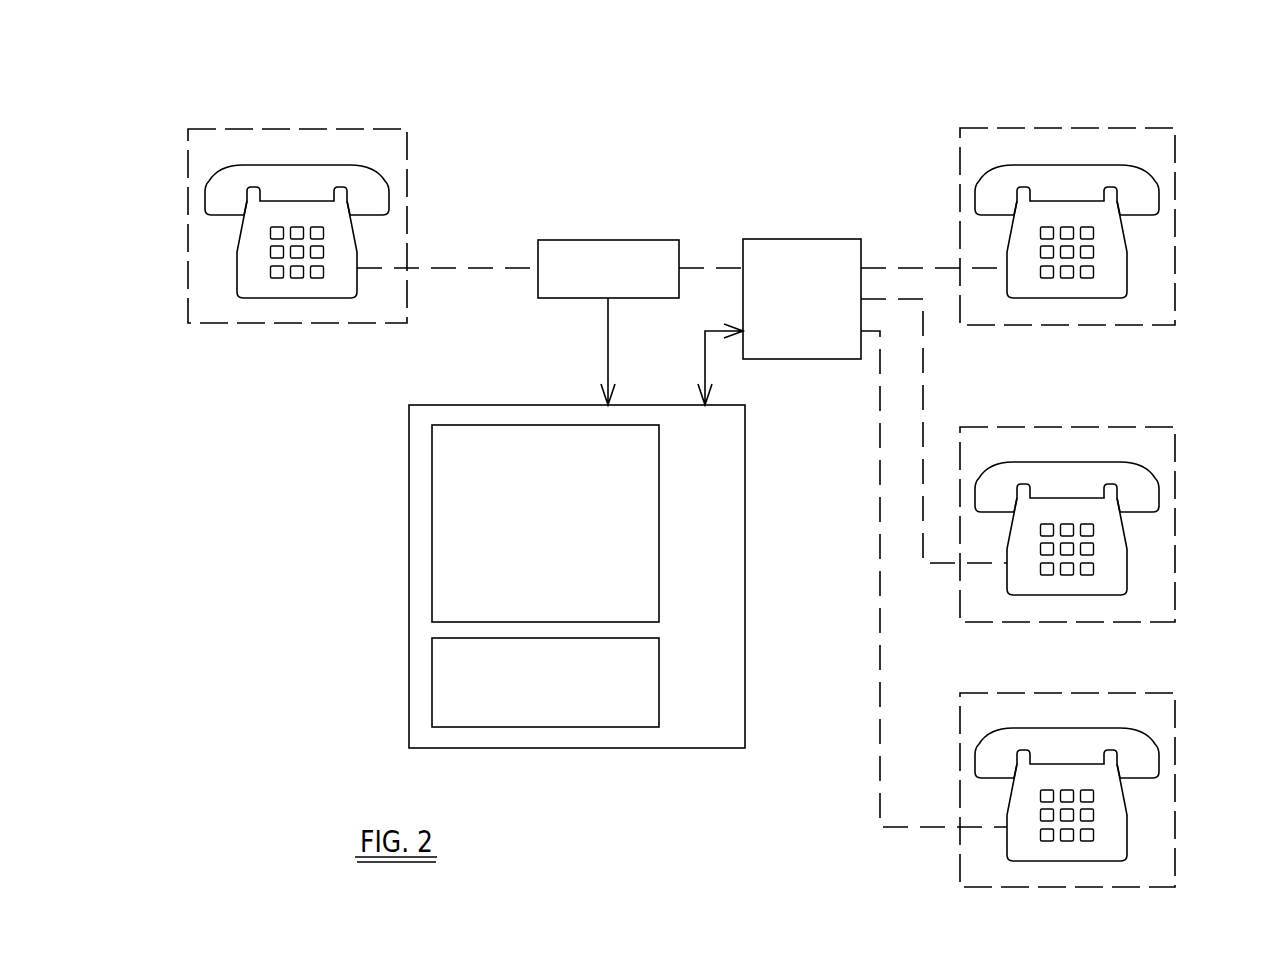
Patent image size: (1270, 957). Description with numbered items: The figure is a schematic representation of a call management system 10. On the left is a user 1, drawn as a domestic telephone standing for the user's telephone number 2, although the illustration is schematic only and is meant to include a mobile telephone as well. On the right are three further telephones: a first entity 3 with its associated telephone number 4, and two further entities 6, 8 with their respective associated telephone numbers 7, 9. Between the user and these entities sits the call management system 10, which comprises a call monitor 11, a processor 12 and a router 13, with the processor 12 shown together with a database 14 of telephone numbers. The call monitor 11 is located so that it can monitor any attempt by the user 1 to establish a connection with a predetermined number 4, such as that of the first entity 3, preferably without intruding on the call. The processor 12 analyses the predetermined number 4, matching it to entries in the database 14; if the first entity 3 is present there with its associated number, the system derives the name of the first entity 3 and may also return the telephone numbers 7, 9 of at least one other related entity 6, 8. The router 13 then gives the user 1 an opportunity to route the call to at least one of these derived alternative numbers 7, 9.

The user 1 is at (212, 129).
The telephone number 2 is at (256, 299).
The first entity 3 is at (1153, 128).
The telephone number 4 is at (1127, 266).
The further entity 6 is at (1150, 427).
The telephone number 7 is at (1127, 562).
The further entity 8 is at (1176, 715).
The telephone number 9 is at (1127, 828).
The call management system 10 is at (632, 171).
The call monitor 11 is at (558, 240).
The processor 12 is at (432, 487).
The router 13 is at (825, 239).
The database 14 is at (432, 701).